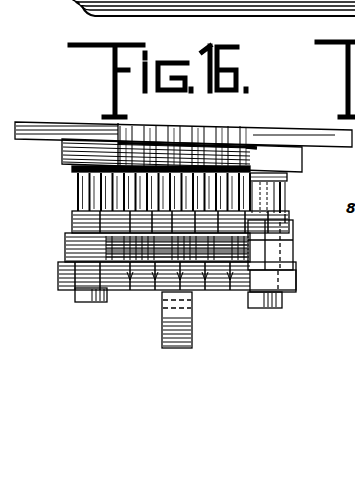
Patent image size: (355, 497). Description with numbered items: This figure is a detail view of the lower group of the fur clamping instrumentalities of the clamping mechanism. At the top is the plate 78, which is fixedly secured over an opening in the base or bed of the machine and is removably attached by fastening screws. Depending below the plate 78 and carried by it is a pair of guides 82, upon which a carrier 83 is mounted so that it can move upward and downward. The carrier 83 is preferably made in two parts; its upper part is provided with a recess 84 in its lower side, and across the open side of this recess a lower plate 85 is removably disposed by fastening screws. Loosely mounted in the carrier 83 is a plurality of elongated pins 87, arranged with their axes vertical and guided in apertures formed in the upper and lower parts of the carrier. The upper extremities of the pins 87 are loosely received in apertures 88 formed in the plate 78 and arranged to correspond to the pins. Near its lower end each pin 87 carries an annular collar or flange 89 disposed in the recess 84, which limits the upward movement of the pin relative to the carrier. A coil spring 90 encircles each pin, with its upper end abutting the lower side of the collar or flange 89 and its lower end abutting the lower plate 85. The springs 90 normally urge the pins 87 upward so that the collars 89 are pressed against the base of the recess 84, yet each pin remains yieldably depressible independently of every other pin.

The plate 78 is at (31, 123).
The guides 82 is at (88, 190).
The carrier 83 is at (72, 221).
The recess 84 is at (90, 251).
The plate 85 is at (62, 282).
The elongated pins 87 is at (228, 176).
The apertures 88 is at (254, 147).
The annular collar or flange 89 is at (287, 218).
The coil spring 90 is at (190, 276).